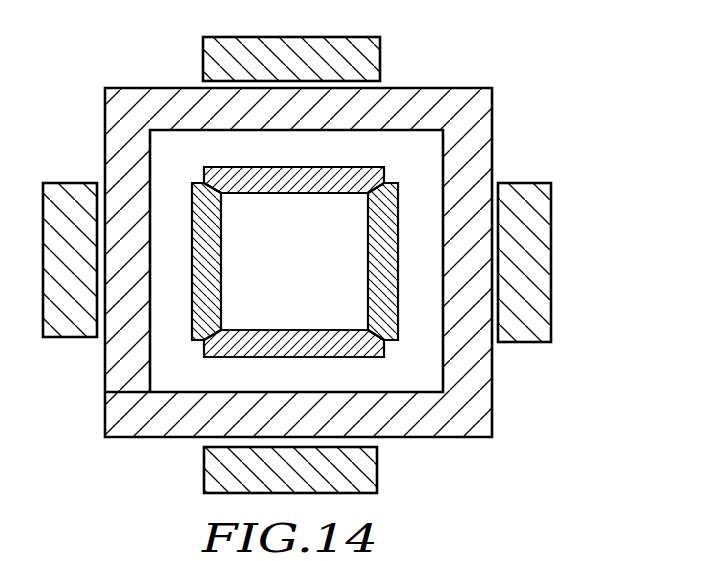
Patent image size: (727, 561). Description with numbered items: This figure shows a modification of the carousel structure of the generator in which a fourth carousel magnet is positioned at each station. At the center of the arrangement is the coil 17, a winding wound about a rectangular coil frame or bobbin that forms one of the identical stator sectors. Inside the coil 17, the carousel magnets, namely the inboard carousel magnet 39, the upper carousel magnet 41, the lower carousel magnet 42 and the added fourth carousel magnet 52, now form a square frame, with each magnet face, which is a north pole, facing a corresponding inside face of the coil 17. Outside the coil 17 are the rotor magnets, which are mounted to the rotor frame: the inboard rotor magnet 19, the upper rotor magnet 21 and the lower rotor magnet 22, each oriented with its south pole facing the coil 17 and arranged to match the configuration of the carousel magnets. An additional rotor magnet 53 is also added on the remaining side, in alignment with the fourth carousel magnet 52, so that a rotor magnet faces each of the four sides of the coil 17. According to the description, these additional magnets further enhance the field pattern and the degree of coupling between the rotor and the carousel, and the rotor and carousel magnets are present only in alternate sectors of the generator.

The coil 17 is at (452, 100).
The inboard rotor magnet 19 is at (551, 217).
The upper rotor magnet 21 is at (370, 47).
The lower rotor magnet 22 is at (378, 481).
The inboard carousel magnet 39 is at (373, 227).
The upper carousel magnet 41 is at (258, 195).
The lower carousel magnet 42 is at (322, 334).
The fourth carousel magnet 52 is at (198, 322).
The additional rotor magnet 53 is at (67, 187).